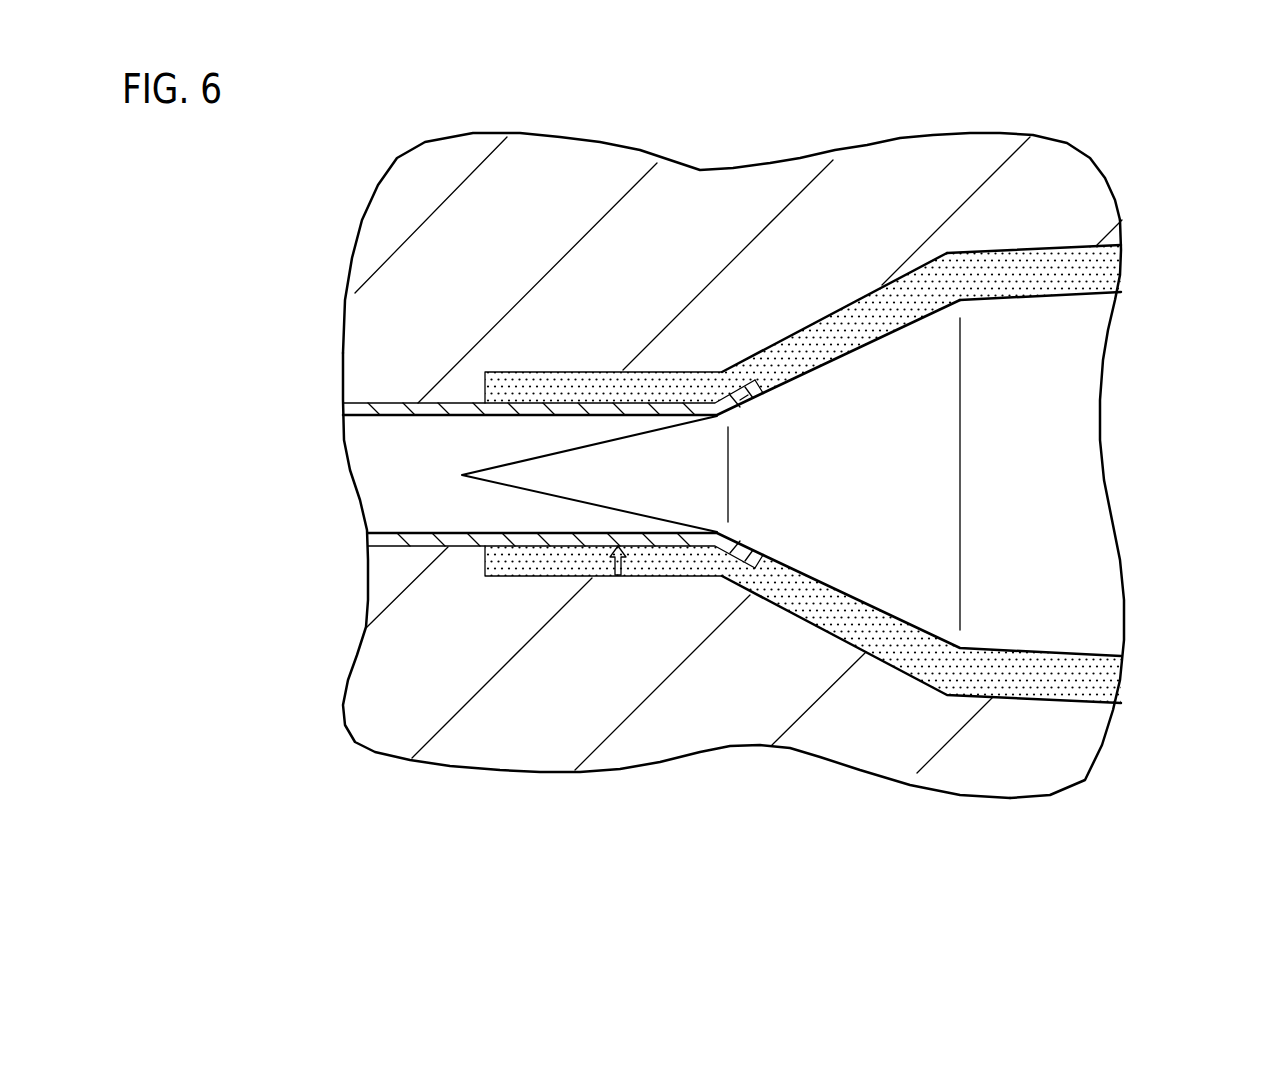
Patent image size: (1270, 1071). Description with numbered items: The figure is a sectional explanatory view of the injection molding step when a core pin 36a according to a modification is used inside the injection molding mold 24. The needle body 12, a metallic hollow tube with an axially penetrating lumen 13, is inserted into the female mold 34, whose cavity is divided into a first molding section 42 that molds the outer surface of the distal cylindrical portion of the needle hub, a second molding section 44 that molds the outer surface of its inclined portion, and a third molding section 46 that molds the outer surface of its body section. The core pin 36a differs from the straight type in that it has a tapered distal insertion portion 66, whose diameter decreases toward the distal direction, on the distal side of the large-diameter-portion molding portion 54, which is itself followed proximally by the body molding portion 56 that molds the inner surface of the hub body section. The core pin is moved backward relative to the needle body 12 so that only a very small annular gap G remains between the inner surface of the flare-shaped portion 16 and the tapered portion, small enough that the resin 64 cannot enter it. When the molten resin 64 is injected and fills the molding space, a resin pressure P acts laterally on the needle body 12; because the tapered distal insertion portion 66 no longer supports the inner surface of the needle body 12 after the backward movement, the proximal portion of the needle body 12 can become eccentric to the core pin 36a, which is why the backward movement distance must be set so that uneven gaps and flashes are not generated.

The injection molding mold 24 is at (740, 447).
The female mold 34 is at (700, 168).
The core pin 36a is at (1102, 405).
The needle body 12 is at (397, 402).
The lumen 13 is at (398, 518).
The flare-shaped portion 16 is at (738, 552).
The first molding section 42 is at (558, 375).
The second molding section 44 is at (821, 331).
The third molding section 46 is at (989, 264).
The resin 64 is at (1034, 236).
The large-diameter-portion molding portion 54 is at (913, 600).
The tapered distal insertion portion 66 is at (540, 472).
The body molding portion 56 is at (1080, 507).
The gap G is at (746, 404).
The resin pressure P is at (626, 560).